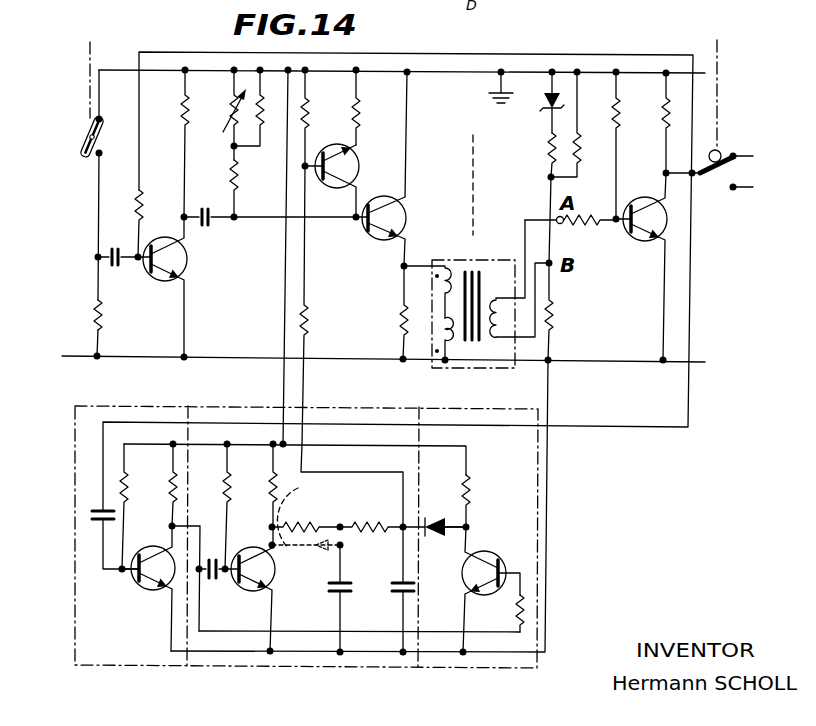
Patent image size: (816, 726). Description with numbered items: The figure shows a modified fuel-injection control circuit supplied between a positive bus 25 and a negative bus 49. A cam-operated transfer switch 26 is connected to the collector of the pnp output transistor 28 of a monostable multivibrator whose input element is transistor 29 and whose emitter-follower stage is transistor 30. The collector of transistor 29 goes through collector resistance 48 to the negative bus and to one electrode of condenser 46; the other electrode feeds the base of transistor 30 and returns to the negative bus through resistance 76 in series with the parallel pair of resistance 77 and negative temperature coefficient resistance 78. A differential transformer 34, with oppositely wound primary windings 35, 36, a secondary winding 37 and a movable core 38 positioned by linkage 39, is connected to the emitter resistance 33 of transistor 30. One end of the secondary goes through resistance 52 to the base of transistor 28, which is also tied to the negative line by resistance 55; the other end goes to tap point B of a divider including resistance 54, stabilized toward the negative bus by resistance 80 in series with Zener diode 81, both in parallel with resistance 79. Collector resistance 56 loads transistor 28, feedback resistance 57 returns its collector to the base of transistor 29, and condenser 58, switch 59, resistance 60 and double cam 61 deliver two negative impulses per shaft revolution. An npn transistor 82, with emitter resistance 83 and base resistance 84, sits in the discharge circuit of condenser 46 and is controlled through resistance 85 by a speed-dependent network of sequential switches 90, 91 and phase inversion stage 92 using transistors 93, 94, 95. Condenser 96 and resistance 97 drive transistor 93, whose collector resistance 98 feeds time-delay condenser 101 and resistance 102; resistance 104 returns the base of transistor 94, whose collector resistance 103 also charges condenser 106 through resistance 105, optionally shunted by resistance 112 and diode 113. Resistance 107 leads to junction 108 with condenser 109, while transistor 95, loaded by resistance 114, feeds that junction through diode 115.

The positive bus 25 is at (326, 358).
The transfer switch 26 is at (724, 190).
The pnp transistor 28 is at (652, 244).
The pnp transistor 29 is at (187, 266).
The pnp transistor 30 is at (400, 206).
The emitter resistance 33 is at (398, 322).
The differential transformer 34 is at (474, 262).
The primary winding 35 is at (440, 282).
The primary winding 36 is at (440, 334).
The secondary winding 37 is at (500, 328).
The movable core 38 is at (474, 292).
The linkage 39 is at (471, 150).
The condenser 46 is at (208, 223).
The collector resistance 48 is at (182, 104).
The negative bus 49 is at (436, 72).
The resistance 52 is at (582, 226).
The resistance 54 is at (556, 318).
The resistance 55 is at (612, 110).
The collector resistance 56 is at (662, 120).
The feedback resistance 57 is at (137, 204).
The condenser 58 is at (120, 266).
The switch 59 is at (101, 128).
The resistance 60 is at (95, 314).
The double cam 61 is at (85, 125).
The resistance 76 is at (231, 178).
The resistance 77 is at (262, 134).
The negative temperature coefficient resistance 78 is at (228, 106).
The resistance 79 is at (584, 163).
The resistance 80 is at (548, 146).
The Zener diode 81 is at (546, 104).
The npn transistor 82 is at (358, 164).
The resistance 83 is at (358, 112).
The resistance 84 is at (306, 110).
The resistance 85 is at (306, 306).
The switch 90 is at (106, 666).
The switch 91 is at (290, 668).
The phase inversion stage 92 is at (434, 668).
The npn switching transistor 93 is at (142, 587).
The npn switching transistor 94 is at (262, 548).
The npn switching transistor 95 is at (486, 552).
The condenser 96 is at (92, 516).
The resistance 97 is at (130, 490).
The collector resistance 98 is at (178, 492).
The condenser 101 is at (214, 580).
The resistance 102 is at (530, 604).
The resistance 103 is at (276, 474).
The resistance 104 is at (231, 492).
The resistance 105 is at (318, 522).
The condenser 106 is at (336, 588).
The resistance 107 is at (376, 532).
The junction 108 is at (422, 520).
The condenser 109 is at (398, 592).
The resistance 112 is at (304, 517).
The diode 113 is at (318, 552).
The resistance 114 is at (470, 488).
The diode 115 is at (438, 542).